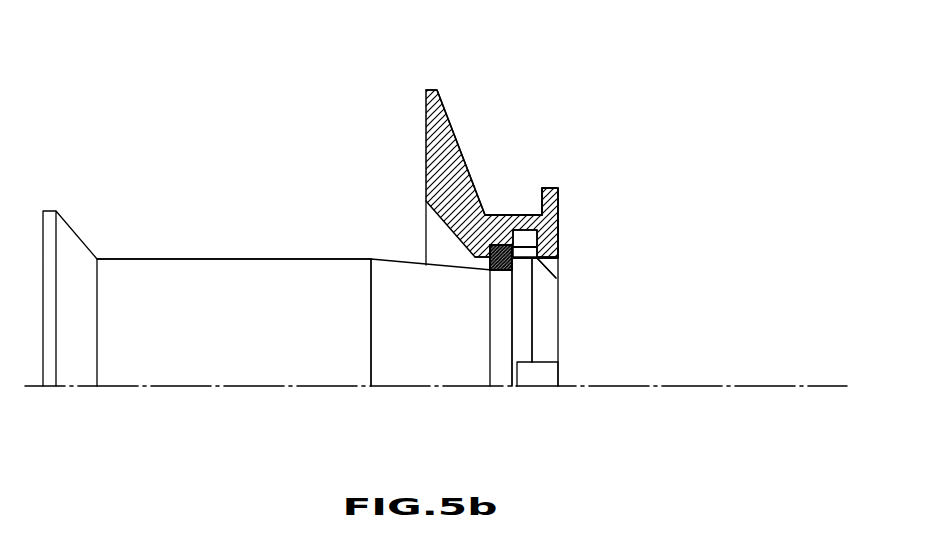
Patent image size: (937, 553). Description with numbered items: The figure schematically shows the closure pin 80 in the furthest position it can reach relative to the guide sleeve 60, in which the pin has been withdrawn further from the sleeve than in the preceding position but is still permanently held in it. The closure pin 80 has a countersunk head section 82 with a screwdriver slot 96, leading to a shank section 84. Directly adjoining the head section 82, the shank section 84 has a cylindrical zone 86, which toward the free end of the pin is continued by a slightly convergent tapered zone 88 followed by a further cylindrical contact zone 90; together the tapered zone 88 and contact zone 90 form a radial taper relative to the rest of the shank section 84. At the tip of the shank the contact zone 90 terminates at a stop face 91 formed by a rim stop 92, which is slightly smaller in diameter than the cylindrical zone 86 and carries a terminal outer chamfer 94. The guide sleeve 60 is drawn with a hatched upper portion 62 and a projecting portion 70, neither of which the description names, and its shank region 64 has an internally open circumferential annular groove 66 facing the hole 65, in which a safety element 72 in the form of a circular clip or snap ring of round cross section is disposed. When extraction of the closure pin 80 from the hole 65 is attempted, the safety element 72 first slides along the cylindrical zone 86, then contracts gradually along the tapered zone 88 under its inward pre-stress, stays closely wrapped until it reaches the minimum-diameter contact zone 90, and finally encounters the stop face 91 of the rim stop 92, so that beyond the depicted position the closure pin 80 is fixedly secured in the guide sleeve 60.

The guide sleeve 60 is at (496, 158).
The upstanding plate 62 is at (433, 88).
The shank region 64 is at (508, 214).
The hole 65 is at (478, 270).
The annular groove 66 is at (549, 232).
The flange 70 is at (548, 186).
The safety element 72 is at (540, 247).
The closure pin 80 is at (302, 394).
The head section 82 is at (78, 249).
The shank section 84 is at (321, 254).
The cylindrical zone 86 is at (197, 272).
The tapered zone 88 is at (412, 283).
The contact zone 90 is at (505, 376).
The stop face 91 is at (490, 272).
The rim stop 92 is at (526, 333).
The outer chamfer 94 is at (547, 302).
The screwdriver slot 96 is at (547, 370).